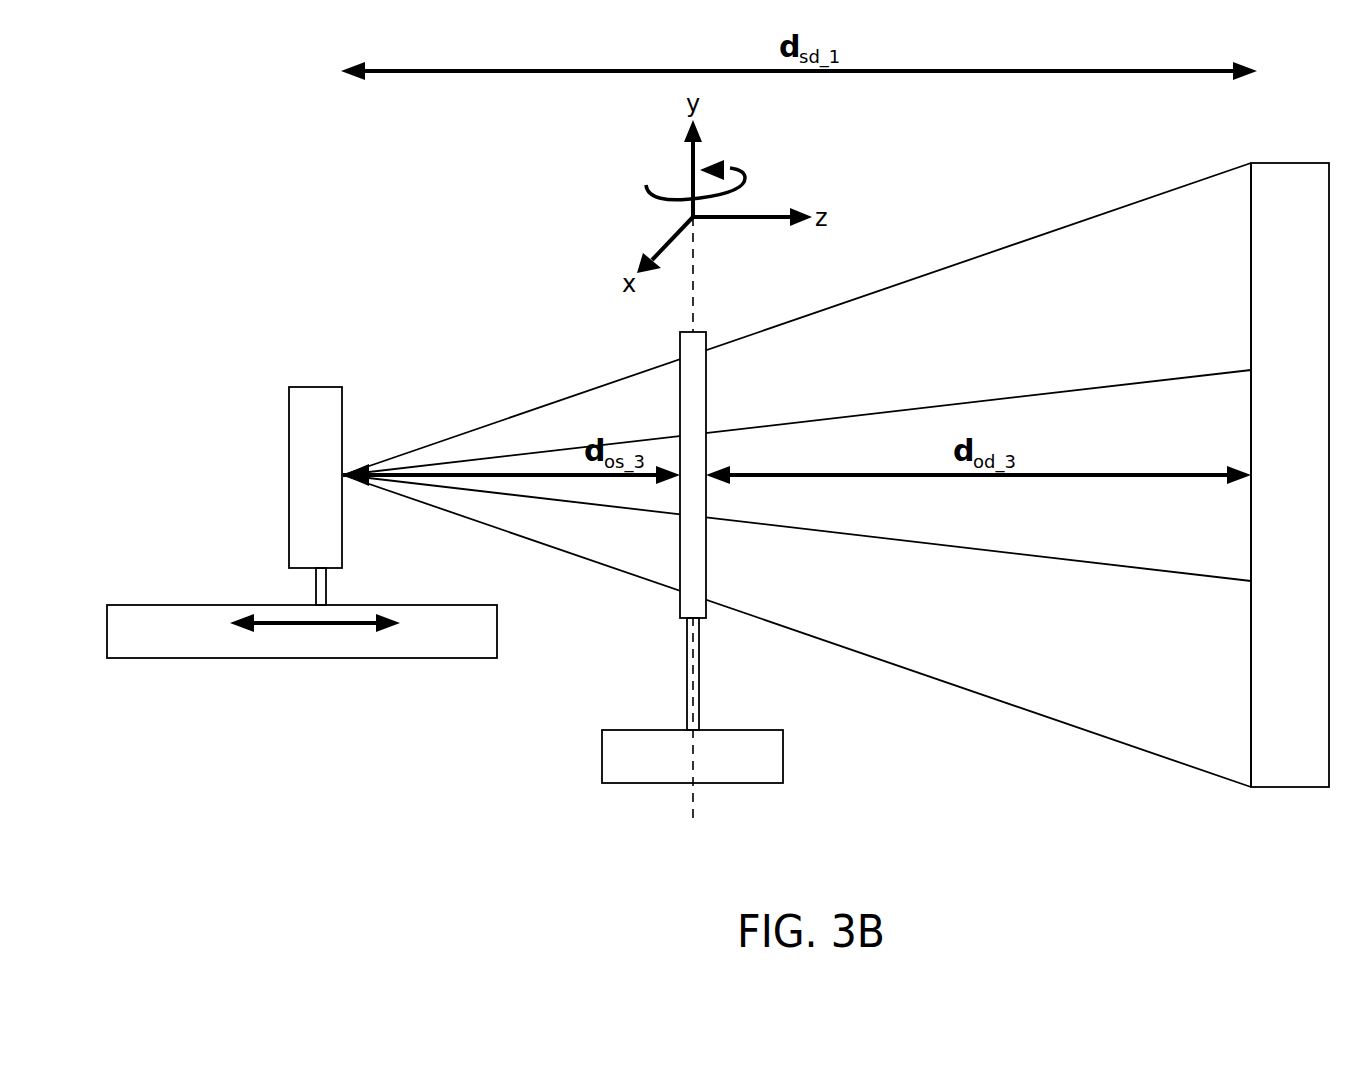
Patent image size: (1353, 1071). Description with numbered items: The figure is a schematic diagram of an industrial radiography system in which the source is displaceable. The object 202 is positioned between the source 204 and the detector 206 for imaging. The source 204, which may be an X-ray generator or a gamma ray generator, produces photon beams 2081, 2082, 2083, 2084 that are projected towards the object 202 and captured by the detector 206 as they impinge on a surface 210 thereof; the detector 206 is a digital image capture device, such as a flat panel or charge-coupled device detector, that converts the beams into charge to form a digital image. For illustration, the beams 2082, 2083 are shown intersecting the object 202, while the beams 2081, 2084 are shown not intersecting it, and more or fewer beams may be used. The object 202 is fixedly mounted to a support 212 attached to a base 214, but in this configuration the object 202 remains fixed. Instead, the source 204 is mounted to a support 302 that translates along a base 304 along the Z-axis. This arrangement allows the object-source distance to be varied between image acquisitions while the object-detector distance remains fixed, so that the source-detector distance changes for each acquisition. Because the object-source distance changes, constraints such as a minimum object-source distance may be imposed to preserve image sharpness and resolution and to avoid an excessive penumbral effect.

The object 202 is at (706, 592).
The source 204 is at (318, 387).
The detector 206 is at (1280, 788).
The photon beam 2081 is at (797, 319).
The photon beam 2082 is at (797, 408).
The photon beam 2083 is at (797, 546).
The photon beam 2084 is at (797, 631).
The surface 210 is at (1251, 273).
The support 212 is at (687, 697).
The base 214 is at (602, 752).
The support 302 is at (326, 585).
The base 304 is at (160, 605).